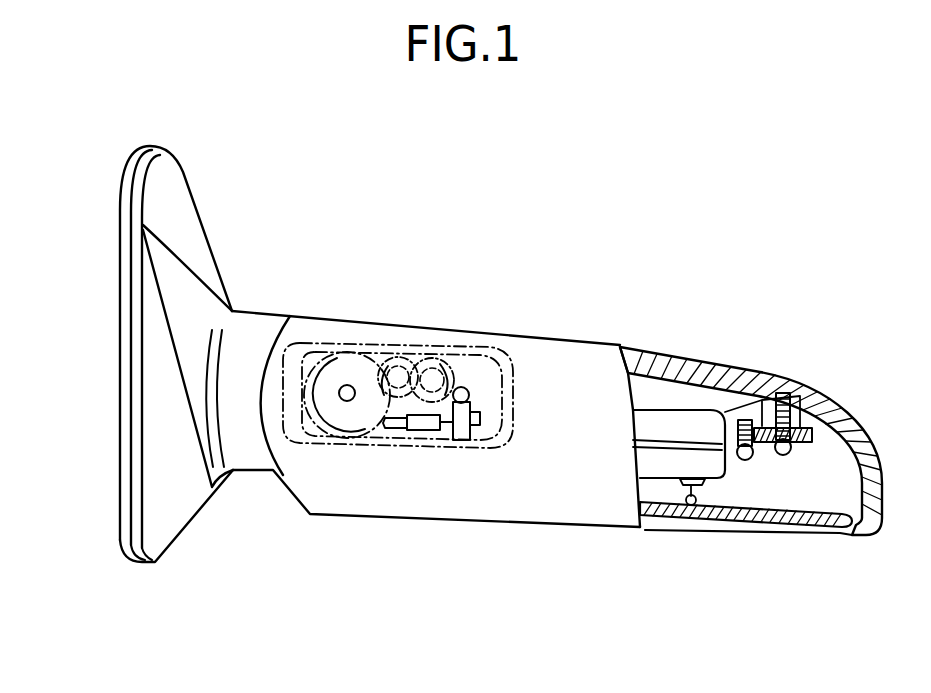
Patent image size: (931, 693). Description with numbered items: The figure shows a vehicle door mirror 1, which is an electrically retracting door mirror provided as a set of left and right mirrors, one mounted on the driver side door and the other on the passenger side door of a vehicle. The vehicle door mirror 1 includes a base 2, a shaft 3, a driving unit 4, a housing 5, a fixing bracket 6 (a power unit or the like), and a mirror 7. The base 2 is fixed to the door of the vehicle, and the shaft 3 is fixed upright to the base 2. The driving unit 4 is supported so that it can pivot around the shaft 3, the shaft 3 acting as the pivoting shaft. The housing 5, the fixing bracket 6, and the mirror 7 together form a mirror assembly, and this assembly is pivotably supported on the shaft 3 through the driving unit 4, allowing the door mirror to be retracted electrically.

The vehicle door mirror 1 is at (781, 253).
The base 2 is at (118, 347).
The shaft 3 is at (355, 401).
The driving unit 4 is at (504, 448).
The housing 5 is at (678, 355).
The fixing bracket 6 is at (812, 430).
The mirror 7 is at (836, 522).